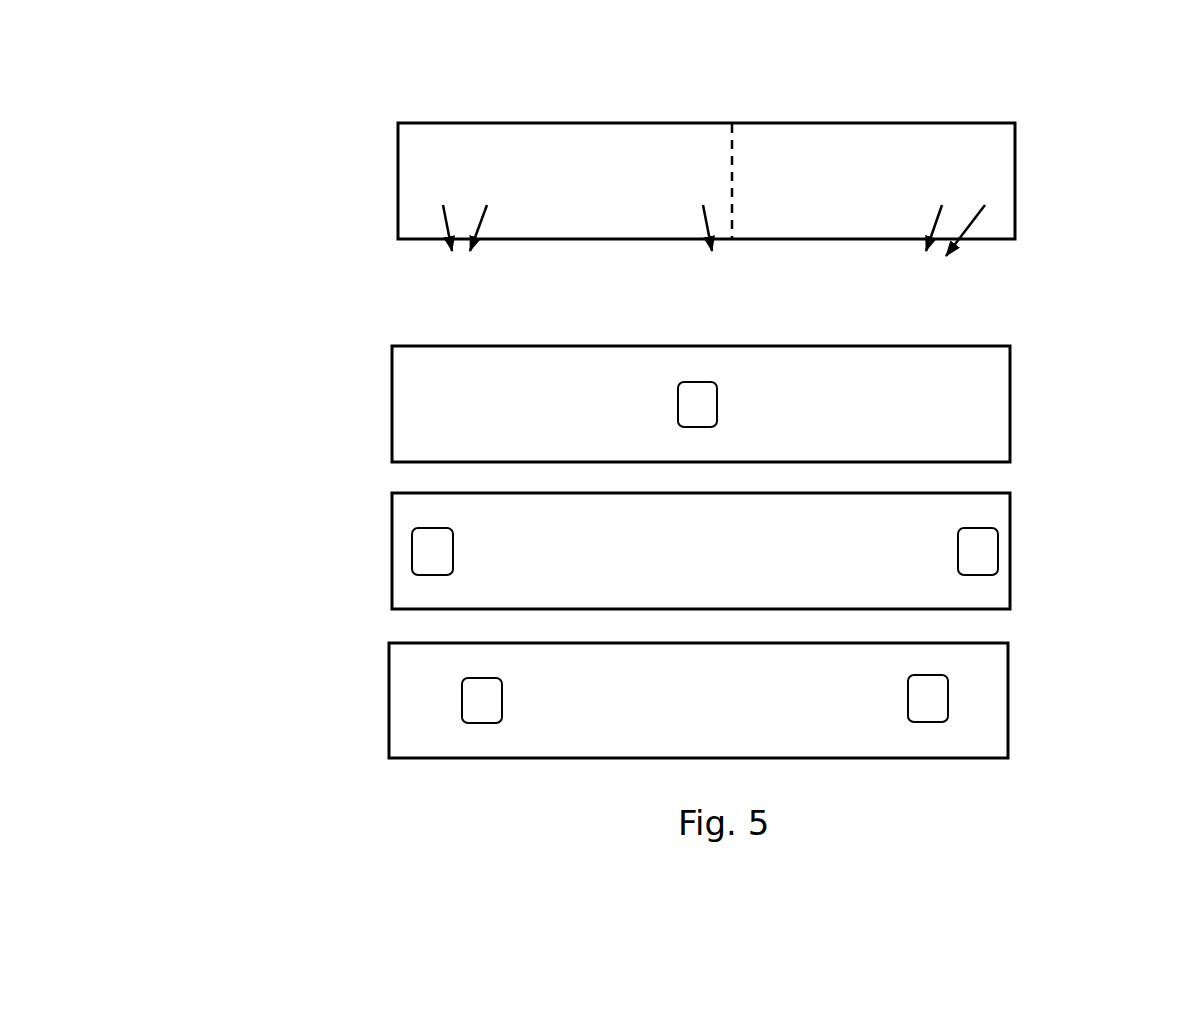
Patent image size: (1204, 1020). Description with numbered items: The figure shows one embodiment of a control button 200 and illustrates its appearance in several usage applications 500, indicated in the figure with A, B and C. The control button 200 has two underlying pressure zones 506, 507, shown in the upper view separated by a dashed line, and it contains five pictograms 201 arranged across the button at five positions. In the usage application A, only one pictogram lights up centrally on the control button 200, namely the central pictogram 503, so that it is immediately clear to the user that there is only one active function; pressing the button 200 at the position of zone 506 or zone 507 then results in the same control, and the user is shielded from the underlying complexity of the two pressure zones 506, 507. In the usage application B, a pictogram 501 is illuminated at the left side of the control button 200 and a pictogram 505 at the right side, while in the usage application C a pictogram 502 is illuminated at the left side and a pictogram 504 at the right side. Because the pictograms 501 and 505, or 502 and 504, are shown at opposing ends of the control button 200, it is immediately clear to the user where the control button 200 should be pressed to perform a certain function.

The control button 200 is at (1015, 180).
The pictograms 201 is at (712, 235).
The usage applications 500 is at (282, 359).
The pictogram 501 is at (412, 540).
The pictogram 502 is at (462, 695).
The third touch position P3 503 is at (717, 405).
The pictogram 504 is at (948, 697).
The pictogram 505 is at (998, 541).
The pressure zone 506 is at (580, 140).
The pressure zone 507 is at (860, 130).